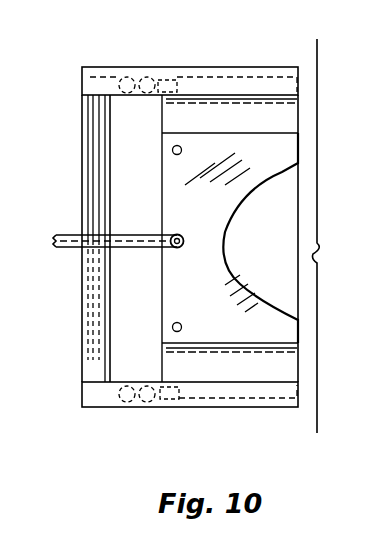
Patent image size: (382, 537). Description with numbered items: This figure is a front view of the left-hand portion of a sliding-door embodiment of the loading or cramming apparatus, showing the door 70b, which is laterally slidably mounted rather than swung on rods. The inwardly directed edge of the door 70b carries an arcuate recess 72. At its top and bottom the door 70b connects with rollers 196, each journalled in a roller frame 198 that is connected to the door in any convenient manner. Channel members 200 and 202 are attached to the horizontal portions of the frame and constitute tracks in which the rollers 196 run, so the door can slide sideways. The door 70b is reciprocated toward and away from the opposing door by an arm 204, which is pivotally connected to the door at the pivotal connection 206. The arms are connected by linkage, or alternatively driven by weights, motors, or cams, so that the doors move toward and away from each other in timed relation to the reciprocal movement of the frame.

The channel member 200 is at (94, 67).
The channel member 202 is at (113, 407).
The roller frame 198 is at (170, 78).
The roller 196 is at (147, 95).
The door 70b is at (255, 108).
The arcuate recess 72 is at (212, 244).
The arm 204 is at (77, 233).
The pivotal connection 206 is at (177, 234).